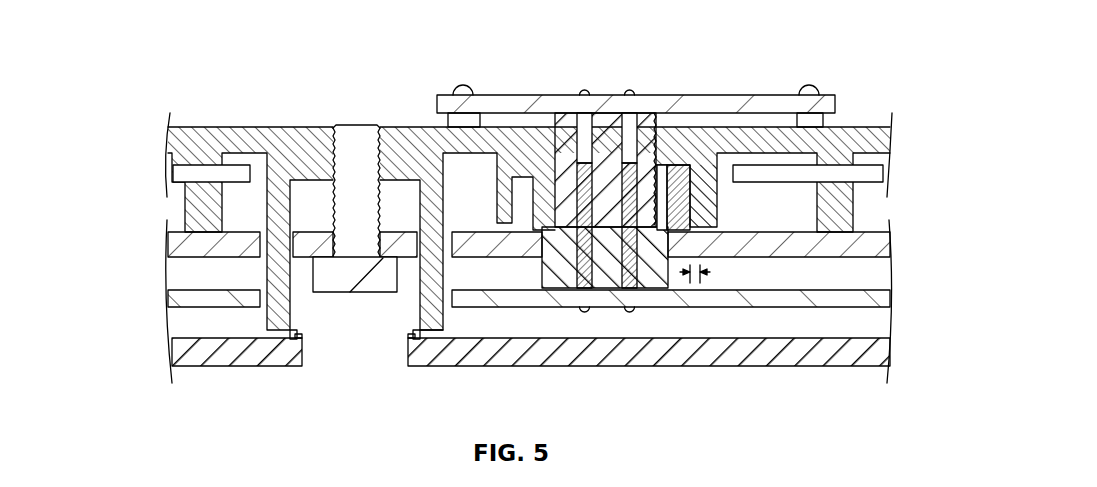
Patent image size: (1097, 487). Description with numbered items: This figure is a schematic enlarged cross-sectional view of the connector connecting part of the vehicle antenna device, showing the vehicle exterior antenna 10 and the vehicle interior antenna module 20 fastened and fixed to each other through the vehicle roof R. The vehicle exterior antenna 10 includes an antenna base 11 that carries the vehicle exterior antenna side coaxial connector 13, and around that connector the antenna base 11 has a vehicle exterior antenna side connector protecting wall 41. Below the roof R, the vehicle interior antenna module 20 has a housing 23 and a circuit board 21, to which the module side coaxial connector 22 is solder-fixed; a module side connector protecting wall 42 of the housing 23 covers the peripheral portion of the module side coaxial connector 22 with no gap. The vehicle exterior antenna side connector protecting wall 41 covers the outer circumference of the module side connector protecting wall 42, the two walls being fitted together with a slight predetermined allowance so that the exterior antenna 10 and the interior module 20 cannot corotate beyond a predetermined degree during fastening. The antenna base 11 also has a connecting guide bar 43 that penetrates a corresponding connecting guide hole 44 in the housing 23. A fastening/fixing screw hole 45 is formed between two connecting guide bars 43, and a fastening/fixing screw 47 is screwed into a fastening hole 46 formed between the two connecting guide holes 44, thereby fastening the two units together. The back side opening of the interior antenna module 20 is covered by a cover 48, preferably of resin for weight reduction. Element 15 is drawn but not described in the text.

The vehicle exterior antenna 10 is at (150, 127).
The antenna base 11 is at (890, 128).
The vehicle exterior antenna side coaxial connector 13 is at (563, 122).
The top bar 15 is at (770, 100).
The vehicle interior antenna module 20 is at (150, 318).
The circuit board 21 is at (890, 296).
The module side coaxial connector 22 is at (650, 277).
The housing 23 is at (166, 254).
The vehicle exterior antenna side connector protecting wall 41 is at (710, 197).
The module side connector protecting wall 42 is at (685, 217).
The connecting guide bar 43 is at (445, 326).
The connecting guide hole 44 is at (445, 223).
The fastening/fixing screw hole 45 is at (323, 150).
The fastening hole 46 is at (330, 247).
The fastening/fixing screw 47 is at (372, 293).
The cover 48 is at (766, 361).
The vehicle roof R is at (177, 176).